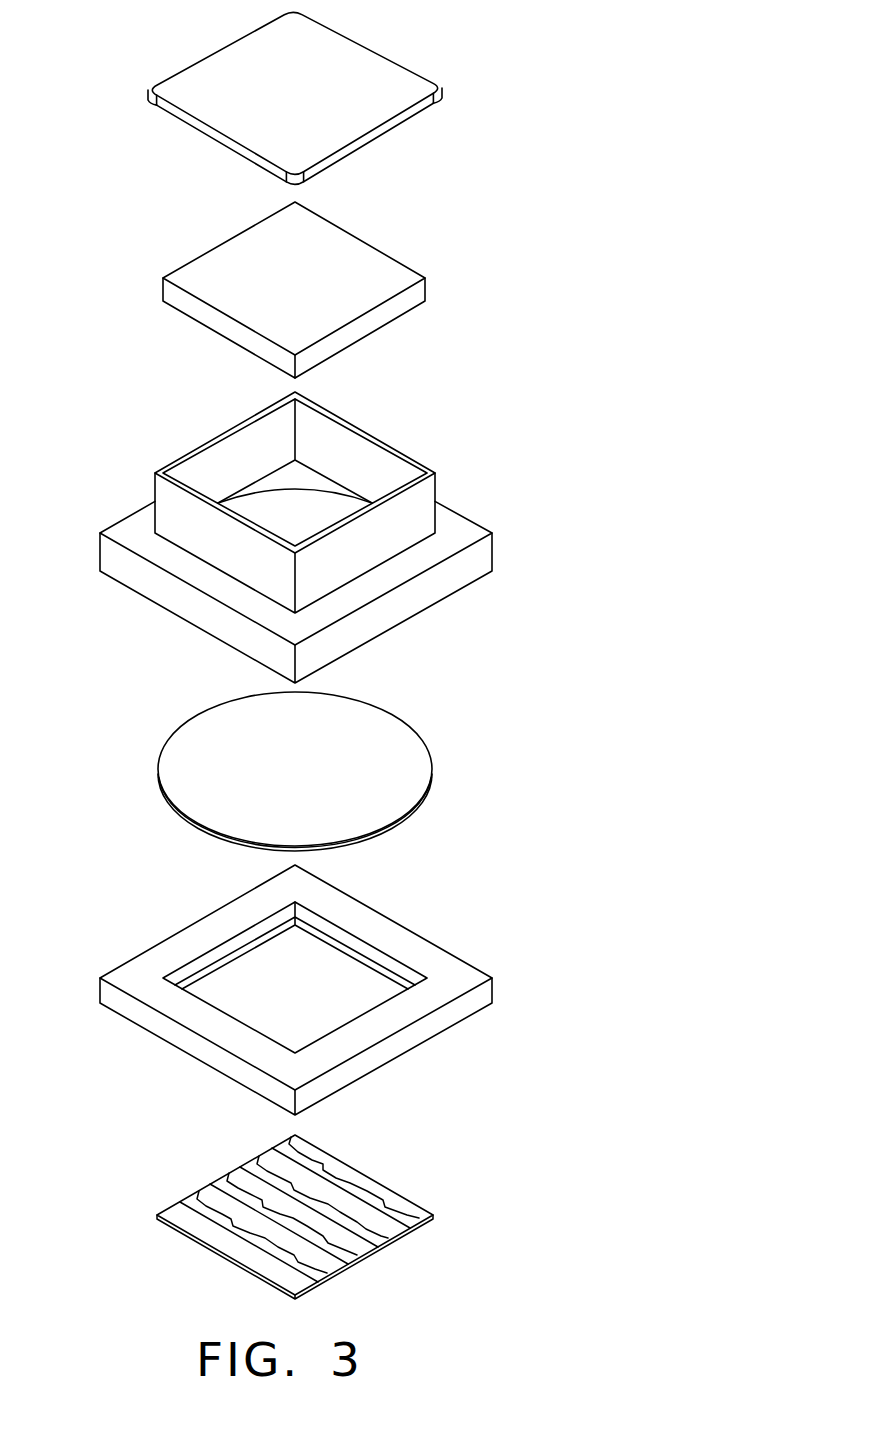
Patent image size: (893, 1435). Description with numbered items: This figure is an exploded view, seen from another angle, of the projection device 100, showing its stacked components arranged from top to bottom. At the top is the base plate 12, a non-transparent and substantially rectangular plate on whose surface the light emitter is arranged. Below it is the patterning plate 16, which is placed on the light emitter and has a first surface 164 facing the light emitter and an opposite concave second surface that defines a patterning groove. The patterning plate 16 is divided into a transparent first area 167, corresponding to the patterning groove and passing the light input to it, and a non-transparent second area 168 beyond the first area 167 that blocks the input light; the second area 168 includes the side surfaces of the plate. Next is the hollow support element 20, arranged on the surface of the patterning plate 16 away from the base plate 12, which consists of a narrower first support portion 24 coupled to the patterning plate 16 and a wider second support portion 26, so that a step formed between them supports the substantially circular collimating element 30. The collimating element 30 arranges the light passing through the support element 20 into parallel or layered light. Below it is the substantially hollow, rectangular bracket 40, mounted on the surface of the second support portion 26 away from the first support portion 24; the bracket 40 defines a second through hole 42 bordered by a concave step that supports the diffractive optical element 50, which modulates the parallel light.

The projection device 100 is at (98, 66).
The base plate 12 is at (380, 87).
The patterning plate 16 is at (297, 286).
The first surface 164 is at (192, 275).
The first area 167 is at (293, 280).
The second area 168 is at (223, 325).
The support element 20 is at (279, 537).
The first support portion 24 is at (173, 500).
The second support portion 26 is at (115, 562).
The collimating element 30 is at (380, 743).
The bracket 40 is at (345, 990).
The second through hole 42 is at (338, 978).
The diffractive optical element 50 is at (400, 1218).